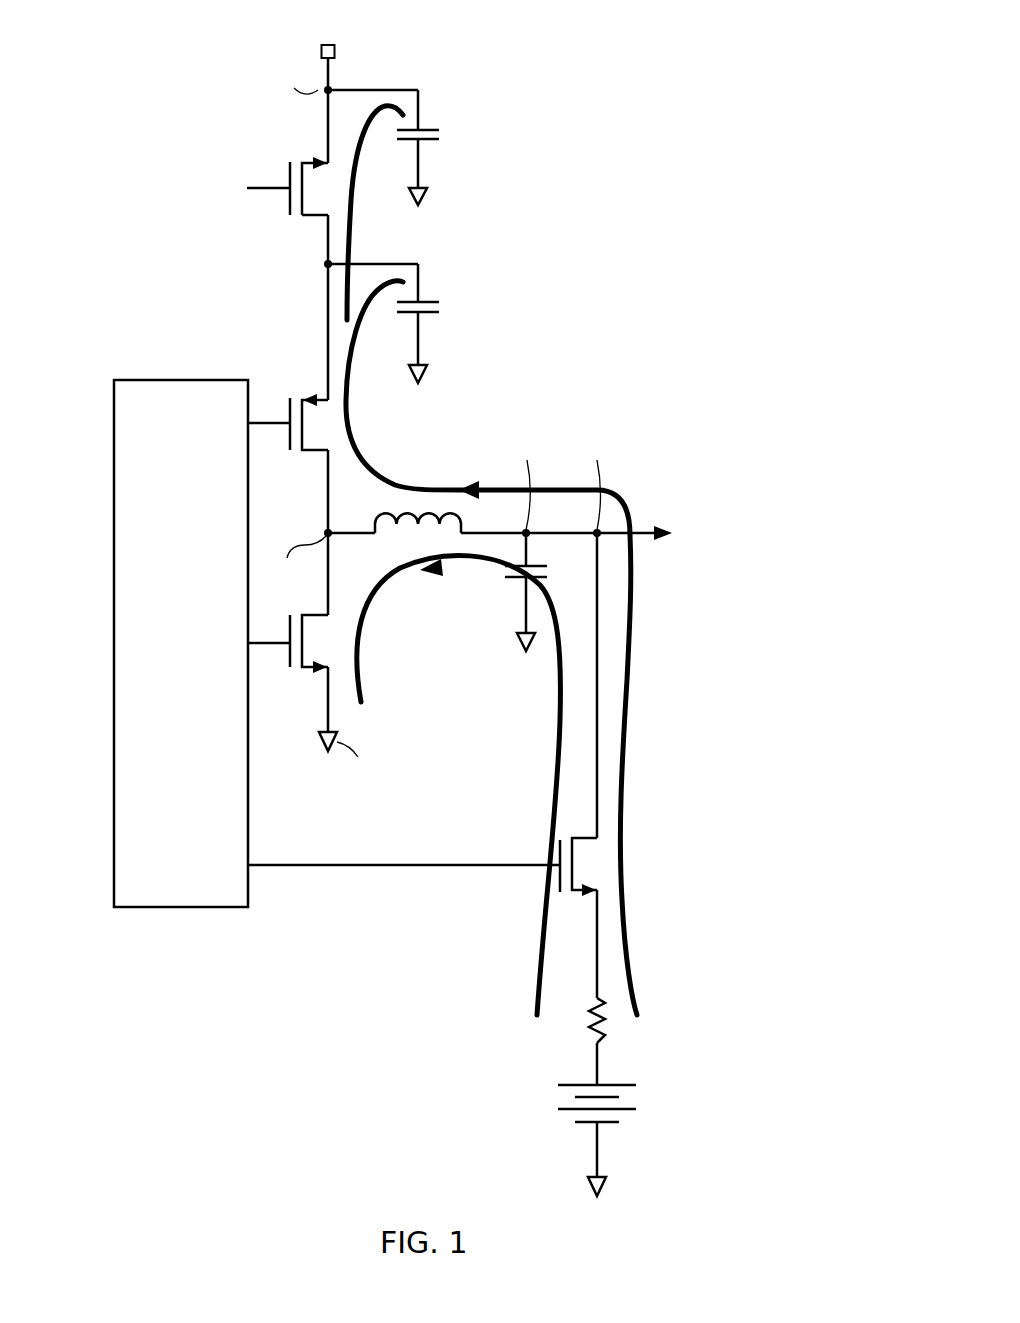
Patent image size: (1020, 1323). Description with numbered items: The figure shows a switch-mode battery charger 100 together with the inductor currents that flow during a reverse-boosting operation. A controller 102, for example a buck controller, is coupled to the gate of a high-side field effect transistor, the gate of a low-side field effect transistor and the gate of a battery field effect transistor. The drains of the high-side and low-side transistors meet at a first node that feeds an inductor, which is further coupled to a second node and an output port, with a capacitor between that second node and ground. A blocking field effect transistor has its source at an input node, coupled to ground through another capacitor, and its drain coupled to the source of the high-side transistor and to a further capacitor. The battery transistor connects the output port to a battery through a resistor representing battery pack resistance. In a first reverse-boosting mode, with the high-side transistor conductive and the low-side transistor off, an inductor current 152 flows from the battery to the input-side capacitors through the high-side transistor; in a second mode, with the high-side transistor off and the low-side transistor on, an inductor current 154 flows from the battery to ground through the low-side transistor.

The switch-mode battery charger 100 is at (442, 603).
The controller 102 is at (172, 380).
The inductor current 152 is at (349, 242).
The inductor current 154 is at (362, 612).